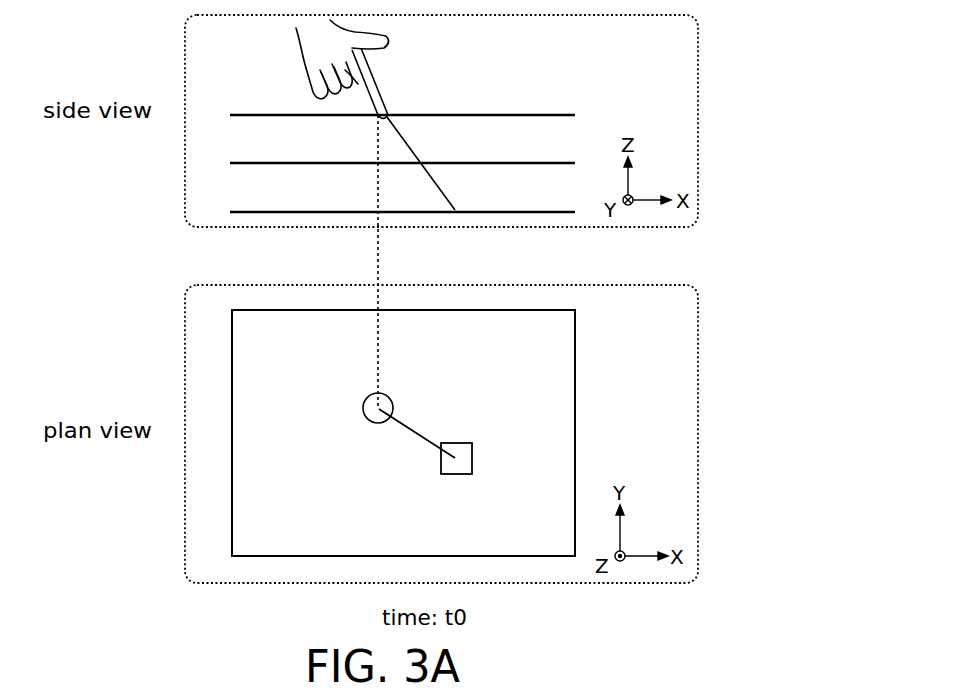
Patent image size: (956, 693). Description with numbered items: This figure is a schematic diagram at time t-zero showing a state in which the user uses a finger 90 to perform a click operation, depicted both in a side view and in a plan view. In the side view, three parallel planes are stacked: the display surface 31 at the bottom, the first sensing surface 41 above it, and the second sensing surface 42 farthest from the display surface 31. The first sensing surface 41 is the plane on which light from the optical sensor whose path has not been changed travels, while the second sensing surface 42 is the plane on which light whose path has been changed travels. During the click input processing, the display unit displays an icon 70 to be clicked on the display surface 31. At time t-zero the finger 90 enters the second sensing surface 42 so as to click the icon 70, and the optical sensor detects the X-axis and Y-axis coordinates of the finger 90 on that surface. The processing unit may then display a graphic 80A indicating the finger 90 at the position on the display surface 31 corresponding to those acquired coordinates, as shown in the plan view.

The finger 90 is at (382, 90).
The second sensing surface 42 is at (530, 113).
The first sensing surface 41 is at (530, 160).
The display surface 31 is at (530, 209).
The graphic 80A is at (382, 395).
The icon 70 is at (470, 443).